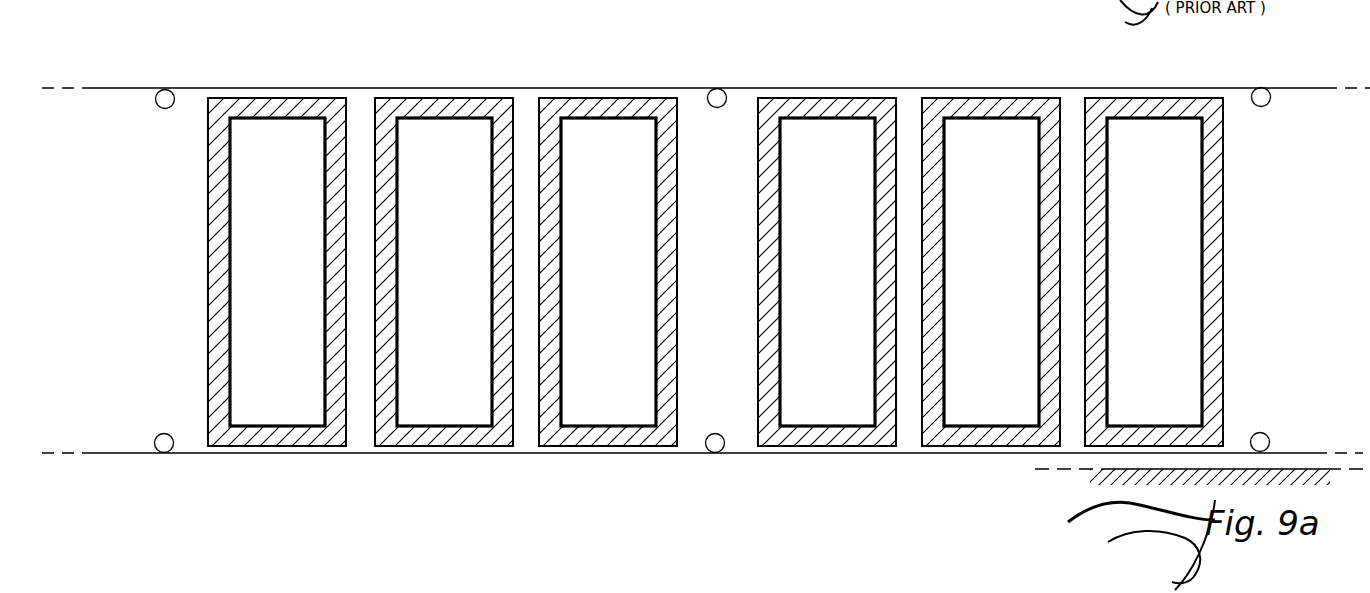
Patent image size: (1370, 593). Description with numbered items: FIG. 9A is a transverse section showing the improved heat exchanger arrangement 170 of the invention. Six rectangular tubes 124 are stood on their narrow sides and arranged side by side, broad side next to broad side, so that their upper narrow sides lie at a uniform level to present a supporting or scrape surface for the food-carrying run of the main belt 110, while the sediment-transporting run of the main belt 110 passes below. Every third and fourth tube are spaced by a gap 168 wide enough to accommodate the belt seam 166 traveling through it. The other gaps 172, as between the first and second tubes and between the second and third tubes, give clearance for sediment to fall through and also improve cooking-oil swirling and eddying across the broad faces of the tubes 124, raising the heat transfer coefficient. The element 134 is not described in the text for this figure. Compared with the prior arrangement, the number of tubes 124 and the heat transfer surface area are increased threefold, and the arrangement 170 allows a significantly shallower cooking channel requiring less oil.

The main belt 110 is at (898, 87).
The rectangular tubes 124 is at (634, 108).
The substrate 134 is at (1090, 470).
The belt seams 166 is at (719, 89).
The gaps at the seams 168 is at (732, 273).
The heat exchanger arrangement 170 is at (452, 72).
The other gaps 172 is at (360, 110).